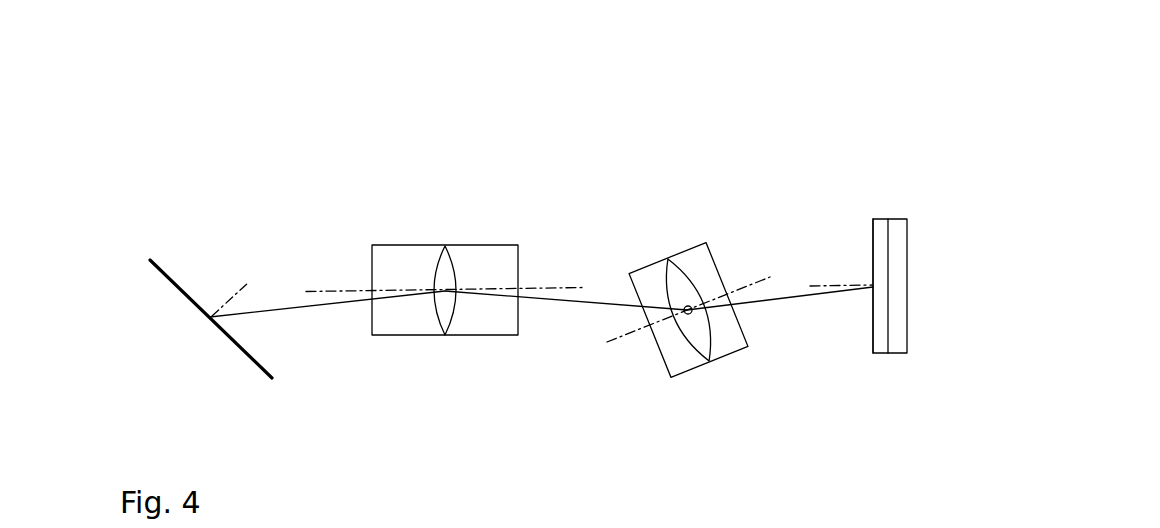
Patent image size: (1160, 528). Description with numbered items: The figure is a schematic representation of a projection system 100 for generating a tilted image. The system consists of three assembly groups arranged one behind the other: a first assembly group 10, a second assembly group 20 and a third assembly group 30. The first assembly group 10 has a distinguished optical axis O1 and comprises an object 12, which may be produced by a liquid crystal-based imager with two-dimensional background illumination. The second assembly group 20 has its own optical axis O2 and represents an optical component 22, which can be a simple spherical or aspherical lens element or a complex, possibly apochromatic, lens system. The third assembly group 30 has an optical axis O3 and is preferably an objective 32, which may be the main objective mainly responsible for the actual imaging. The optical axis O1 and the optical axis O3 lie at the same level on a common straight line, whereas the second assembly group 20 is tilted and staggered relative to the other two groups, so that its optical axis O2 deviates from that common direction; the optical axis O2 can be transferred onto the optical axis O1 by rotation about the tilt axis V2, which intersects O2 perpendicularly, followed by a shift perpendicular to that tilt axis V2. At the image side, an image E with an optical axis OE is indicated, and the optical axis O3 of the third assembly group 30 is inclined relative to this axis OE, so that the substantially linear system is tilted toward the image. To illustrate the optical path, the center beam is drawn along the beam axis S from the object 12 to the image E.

The projection system 100 is at (505, 145).
The image E is at (233, 343).
The optical axis of the image OE is at (248, 283).
The optical axis of the third assembly group O3 is at (333, 293).
The third assembly group 30 is at (402, 337).
The objective 32 is at (452, 267).
The beam axis S is at (600, 300).
The second assembly group 20 is at (660, 360).
The optical component 22 is at (687, 270).
The tilt axis V2 is at (692, 312).
The optical axis of the second assembly group O2 is at (770, 278).
The optical axis of the first assembly group O1 is at (825, 288).
The first assembly group 10 is at (897, 218).
The object 12 is at (873, 305).